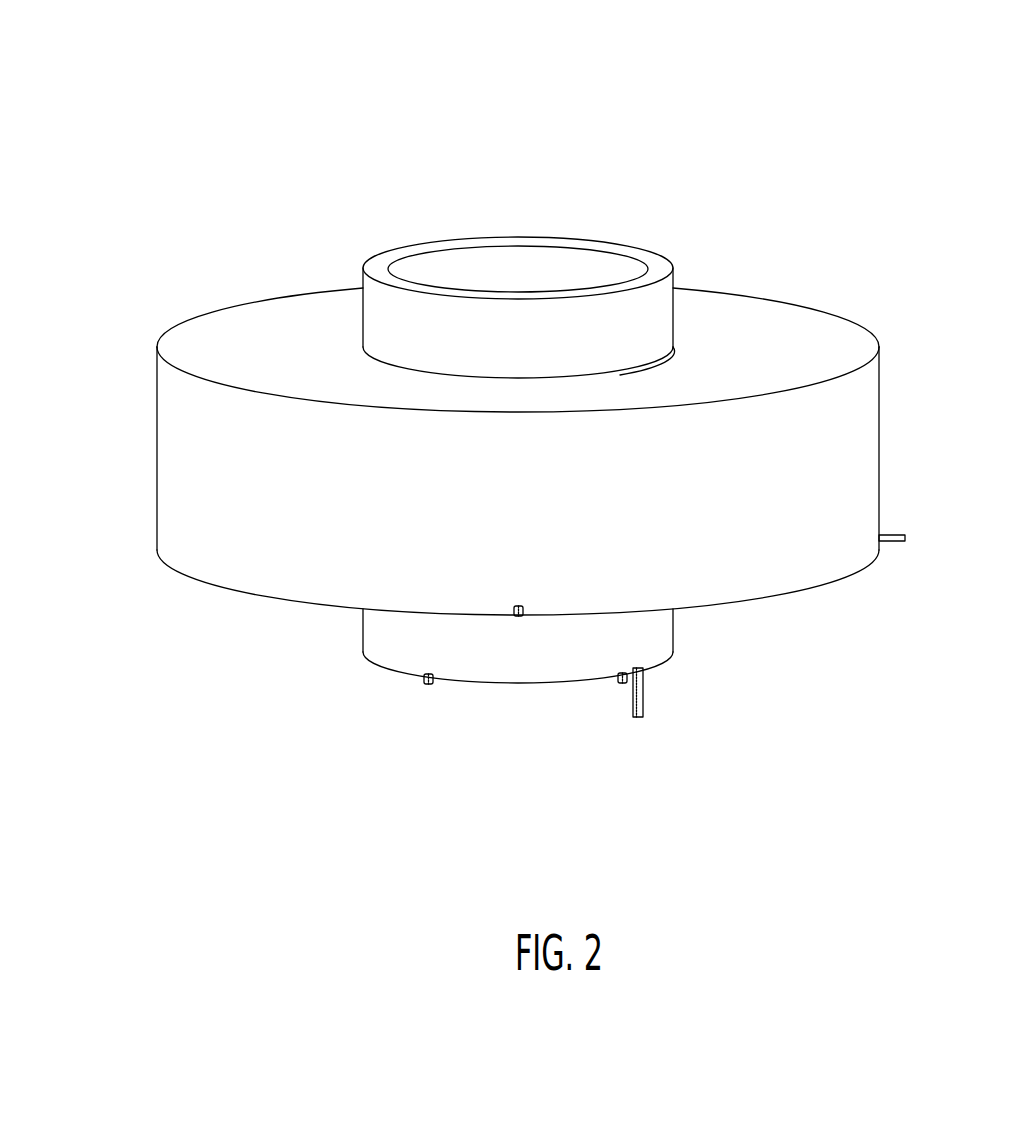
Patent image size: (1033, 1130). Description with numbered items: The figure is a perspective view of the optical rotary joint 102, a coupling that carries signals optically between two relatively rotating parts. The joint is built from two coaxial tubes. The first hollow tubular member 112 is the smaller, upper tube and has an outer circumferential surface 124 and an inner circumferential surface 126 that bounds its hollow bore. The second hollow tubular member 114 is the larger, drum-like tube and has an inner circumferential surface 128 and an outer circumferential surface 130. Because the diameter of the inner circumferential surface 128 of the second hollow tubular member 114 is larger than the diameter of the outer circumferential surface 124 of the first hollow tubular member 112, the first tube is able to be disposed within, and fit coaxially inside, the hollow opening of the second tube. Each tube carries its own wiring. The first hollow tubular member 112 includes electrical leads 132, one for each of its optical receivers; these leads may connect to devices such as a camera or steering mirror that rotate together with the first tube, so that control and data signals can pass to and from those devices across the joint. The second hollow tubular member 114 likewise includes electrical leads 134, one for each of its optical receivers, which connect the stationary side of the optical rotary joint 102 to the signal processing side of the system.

The optical rotary joint 102 is at (116, 85).
The first hollow tubular member 112 is at (372, 317).
The second hollow tubular member 114 is at (173, 480).
The outer circumferential surface 124 is at (420, 247).
The inner circumferential surface 126 is at (633, 258).
The inner circumferential surface 128 is at (647, 363).
The outer circumferential surface 130 is at (188, 317).
The electrical leads 132 is at (617, 684).
The electrical leads 134 is at (517, 606).